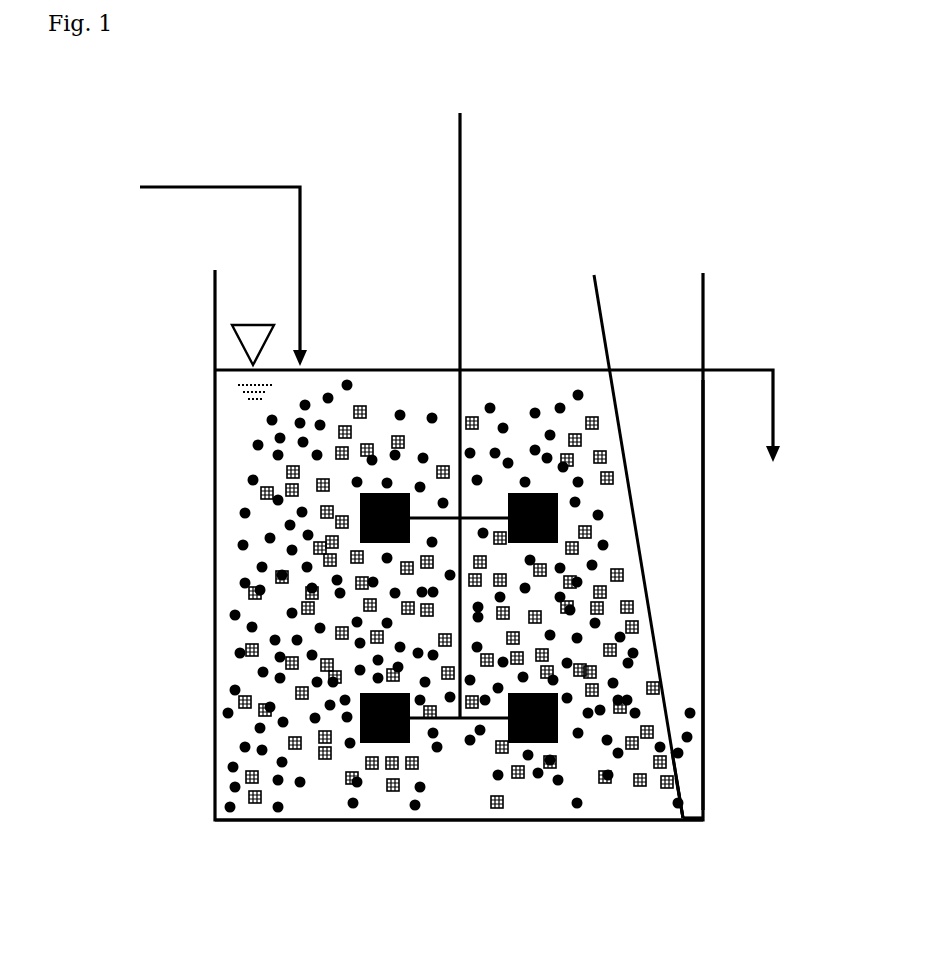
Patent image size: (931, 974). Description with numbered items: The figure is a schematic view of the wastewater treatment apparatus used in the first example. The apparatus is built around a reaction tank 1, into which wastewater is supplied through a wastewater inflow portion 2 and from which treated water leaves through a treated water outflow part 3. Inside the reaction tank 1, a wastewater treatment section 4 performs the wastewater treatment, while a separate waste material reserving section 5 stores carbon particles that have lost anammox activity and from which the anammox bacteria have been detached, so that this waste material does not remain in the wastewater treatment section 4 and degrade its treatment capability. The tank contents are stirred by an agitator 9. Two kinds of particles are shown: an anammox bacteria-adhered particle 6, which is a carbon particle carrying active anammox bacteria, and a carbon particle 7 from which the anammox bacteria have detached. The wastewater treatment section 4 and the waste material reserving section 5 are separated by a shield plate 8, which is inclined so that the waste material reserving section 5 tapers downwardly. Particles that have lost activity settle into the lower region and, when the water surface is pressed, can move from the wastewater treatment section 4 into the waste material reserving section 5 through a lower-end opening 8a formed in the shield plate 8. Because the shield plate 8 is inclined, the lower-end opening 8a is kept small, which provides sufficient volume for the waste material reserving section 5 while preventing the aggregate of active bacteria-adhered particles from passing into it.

The reaction tank 1 is at (215, 328).
The wastewater inflow portion 2 is at (223, 253).
The treated water outflow part 3 is at (511, 416).
The wastewater treatment section 4 is at (228, 548).
The waste material reserving section 5 is at (675, 605).
The anammox bacteria-adhered particle 6 is at (497, 818).
The carbon particle from which anammox bacteria are detached 7 is at (680, 818).
The shield plate 8 is at (598, 313).
The lower-end opening 8a is at (703, 766).
The agitator 9 is at (460, 185).